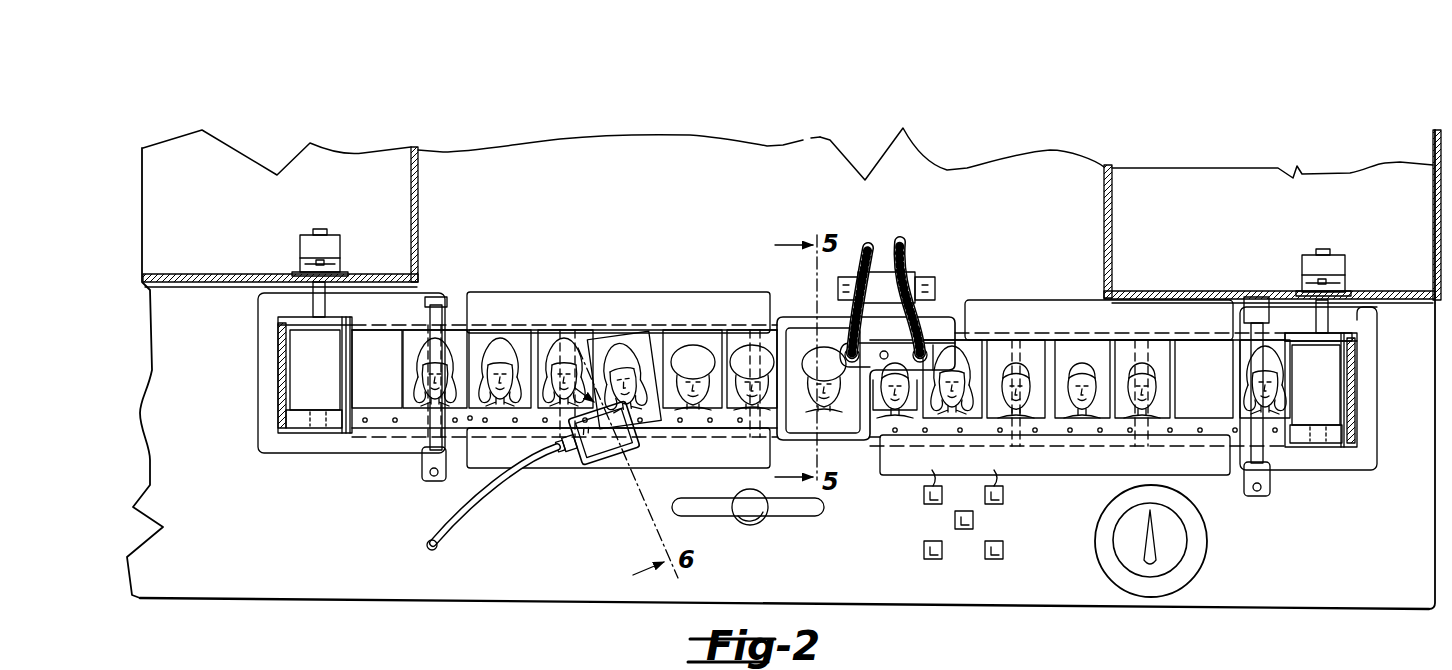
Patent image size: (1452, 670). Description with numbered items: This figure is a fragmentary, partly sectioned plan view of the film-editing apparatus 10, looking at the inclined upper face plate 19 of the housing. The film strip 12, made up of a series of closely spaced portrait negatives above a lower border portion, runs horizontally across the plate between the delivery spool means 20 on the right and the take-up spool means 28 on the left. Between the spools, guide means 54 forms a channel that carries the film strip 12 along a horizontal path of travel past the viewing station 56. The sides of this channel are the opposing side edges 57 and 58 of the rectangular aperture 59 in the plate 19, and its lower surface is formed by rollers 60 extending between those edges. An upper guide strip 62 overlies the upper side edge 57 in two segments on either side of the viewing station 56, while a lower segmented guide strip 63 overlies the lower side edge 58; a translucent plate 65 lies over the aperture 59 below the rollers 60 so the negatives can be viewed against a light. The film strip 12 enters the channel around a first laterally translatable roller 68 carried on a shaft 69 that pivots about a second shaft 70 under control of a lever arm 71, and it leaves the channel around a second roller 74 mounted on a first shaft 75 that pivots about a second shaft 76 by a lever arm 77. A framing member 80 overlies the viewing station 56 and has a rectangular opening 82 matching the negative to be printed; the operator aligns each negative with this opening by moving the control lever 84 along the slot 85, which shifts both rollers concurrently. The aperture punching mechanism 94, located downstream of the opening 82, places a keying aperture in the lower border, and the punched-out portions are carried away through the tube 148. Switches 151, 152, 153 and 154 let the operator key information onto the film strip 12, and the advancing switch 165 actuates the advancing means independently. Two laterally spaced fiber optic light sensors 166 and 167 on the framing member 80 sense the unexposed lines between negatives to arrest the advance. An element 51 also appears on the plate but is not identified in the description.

The apparatus 10 is at (1100, 610).
The film strip 12 is at (672, 335).
The inclined upper face plate 19 is at (573, 565).
The delivery spool means 20 is at (1104, 193).
The take-up spool means 28 is at (424, 175).
The selector knob 51 is at (1205, 546).
The guide means 54 is at (590, 290).
The viewing station 56 is at (860, 356).
The upper side edge 57 is at (1372, 302).
The lower side edge 58 is at (1350, 470).
The rectangular aperture 59 is at (350, 448).
The rollers 60 is at (424, 458).
The upper guide strip 62 is at (522, 300).
The lower segmented guide strip 63 is at (468, 462).
The translucent plate 65 is at (1330, 462).
The first laterally translatable roller 68 is at (1336, 406).
The shaft 69 is at (1332, 322).
The second shaft 70 is at (1325, 252).
The lever arm 71 is at (1345, 265).
The second roller 74 is at (325, 388).
The first shaft 75 is at (327, 303).
The second shaft 76 is at (320, 232).
The lever arm 77 is at (300, 245).
The framing member 80 is at (845, 442).
The rectangular opening 82 is at (806, 441).
The control lever 84 is at (757, 525).
The slot 85 is at (795, 515).
The aperture punching mechanism 94 is at (577, 478).
The tube 148 is at (437, 525).
The switch 151 is at (998, 562).
The switch 152 is at (998, 476).
The switch 153 is at (950, 480).
The switch 154 is at (937, 562).
The advancing switch 165 is at (963, 532).
The fiber optic light sensor 166 is at (836, 328).
The fiber optic light sensor 167 is at (935, 345).